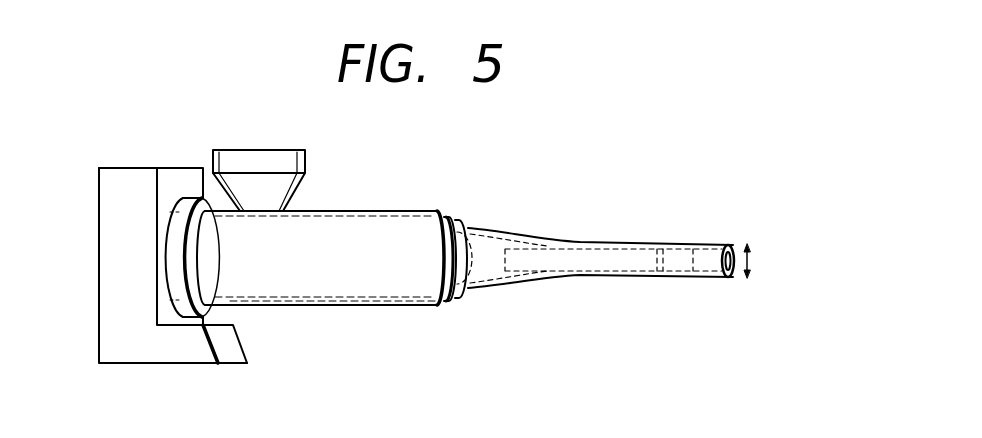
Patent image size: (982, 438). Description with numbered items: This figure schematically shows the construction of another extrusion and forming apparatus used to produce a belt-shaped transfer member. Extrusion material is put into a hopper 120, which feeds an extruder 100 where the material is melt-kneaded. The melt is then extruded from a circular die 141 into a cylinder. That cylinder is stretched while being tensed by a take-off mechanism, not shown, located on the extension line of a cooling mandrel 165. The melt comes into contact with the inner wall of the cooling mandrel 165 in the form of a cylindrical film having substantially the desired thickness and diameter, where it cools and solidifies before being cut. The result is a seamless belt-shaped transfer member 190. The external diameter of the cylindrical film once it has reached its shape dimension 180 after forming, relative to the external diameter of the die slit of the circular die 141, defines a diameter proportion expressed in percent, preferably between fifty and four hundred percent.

The extruder 100 is at (384, 280).
The hopper 120 is at (255, 158).
The circular die 141 is at (494, 285).
The cooling mandrel 165 is at (614, 255).
The shape dimension 180 is at (768, 261).
The seamless belt-shaped transfer member 190 is at (710, 282).